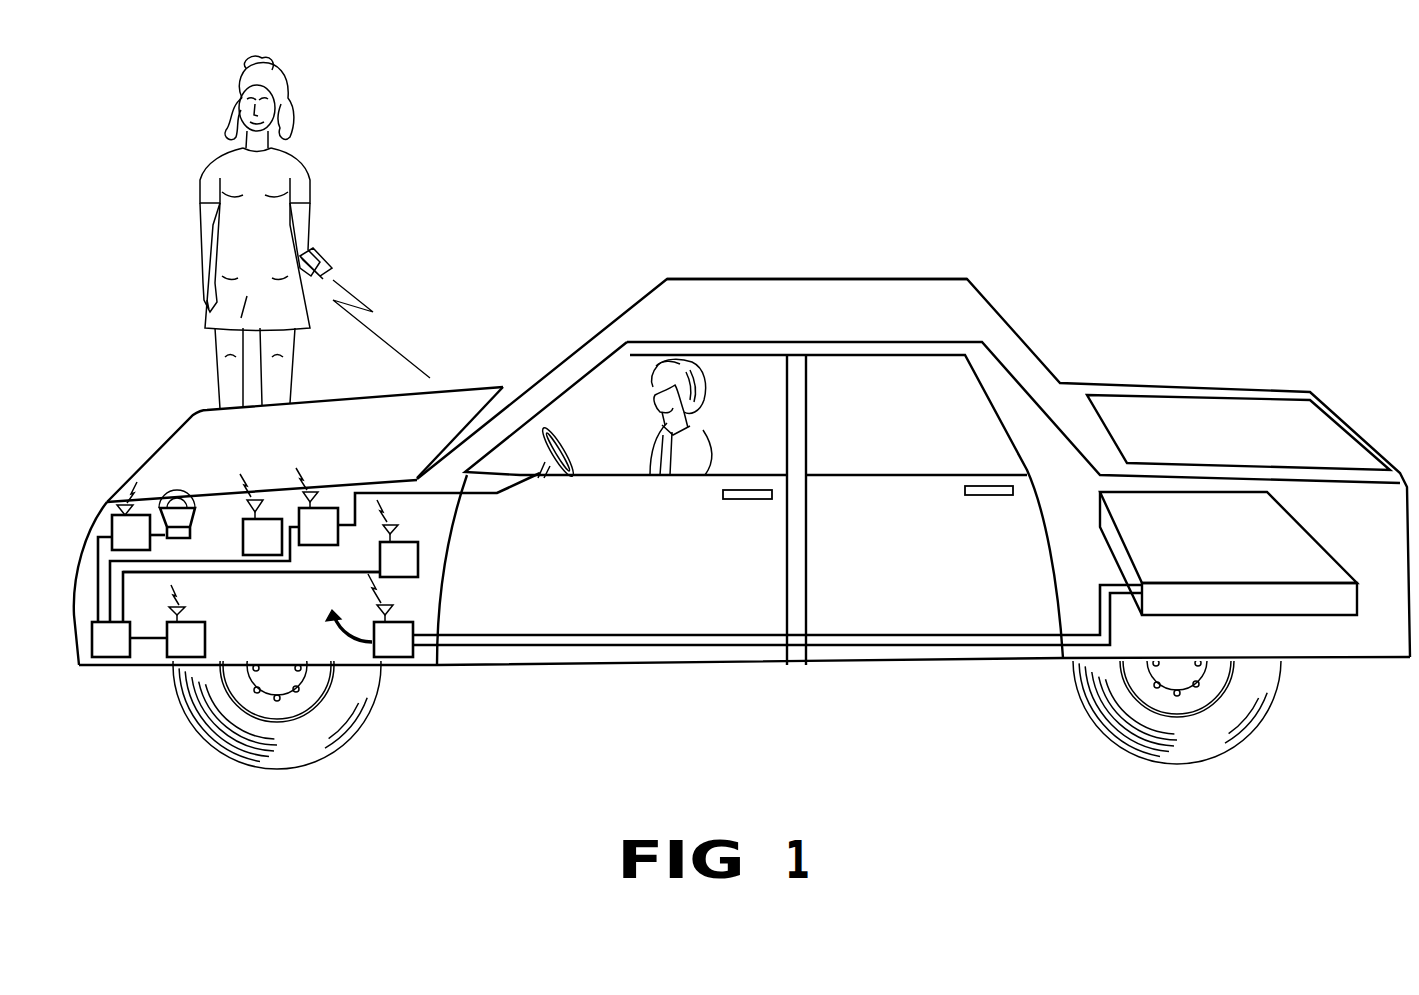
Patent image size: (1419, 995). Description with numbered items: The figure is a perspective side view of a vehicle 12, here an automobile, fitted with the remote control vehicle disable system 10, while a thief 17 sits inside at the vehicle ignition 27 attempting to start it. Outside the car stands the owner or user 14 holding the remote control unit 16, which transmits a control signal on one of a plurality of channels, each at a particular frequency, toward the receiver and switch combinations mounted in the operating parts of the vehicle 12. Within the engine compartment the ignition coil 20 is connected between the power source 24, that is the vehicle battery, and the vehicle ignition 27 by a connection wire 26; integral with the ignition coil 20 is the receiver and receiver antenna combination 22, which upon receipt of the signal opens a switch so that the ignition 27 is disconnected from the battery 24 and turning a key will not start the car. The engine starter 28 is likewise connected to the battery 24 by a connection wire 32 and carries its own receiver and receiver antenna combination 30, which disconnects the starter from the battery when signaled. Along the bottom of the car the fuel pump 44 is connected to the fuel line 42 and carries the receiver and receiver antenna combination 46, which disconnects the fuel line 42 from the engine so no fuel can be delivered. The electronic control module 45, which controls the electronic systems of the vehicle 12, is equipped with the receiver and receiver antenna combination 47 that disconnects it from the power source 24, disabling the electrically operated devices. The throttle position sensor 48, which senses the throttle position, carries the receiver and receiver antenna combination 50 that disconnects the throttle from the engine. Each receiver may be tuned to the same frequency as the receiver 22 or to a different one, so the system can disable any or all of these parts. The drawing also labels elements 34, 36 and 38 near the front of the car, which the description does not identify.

The remote control vehicle disable system 10 is at (171, 428).
The vehicle 12 is at (755, 268).
The user 14 is at (335, 193).
The remote control unit 16 is at (323, 260).
The thief 17 is at (737, 370).
The ignition coil 20 is at (419, 509).
The receiver and receiver antenna combination 22 is at (314, 490).
The power source 24 is at (236, 593).
The connection wire 26 is at (215, 571).
The vehicle ignition 27 is at (548, 479).
The engine starter 28 is at (186, 640).
The receiver and receiver antenna combination 30 is at (187, 610).
The connection wire 32 is at (150, 658).
The speaker 34 is at (210, 500).
The receiver module 36 is at (138, 533).
The antenna 38 is at (108, 500).
The fuel line 42 is at (522, 648).
The fuel pump 44 is at (369, 634).
The electronic control module 45 is at (399, 560).
The receiver and receiver antenna combination 46 is at (394, 612).
The receiver and receiver antenna combination 47 is at (397, 529).
The throttle position sensor 48 is at (262, 537).
The receiver and receiver antenna combination 50 is at (256, 499).